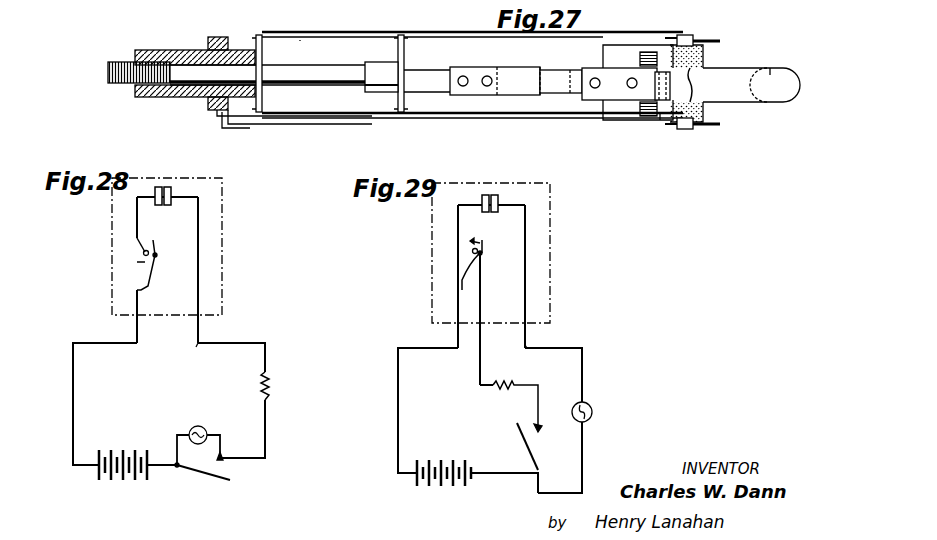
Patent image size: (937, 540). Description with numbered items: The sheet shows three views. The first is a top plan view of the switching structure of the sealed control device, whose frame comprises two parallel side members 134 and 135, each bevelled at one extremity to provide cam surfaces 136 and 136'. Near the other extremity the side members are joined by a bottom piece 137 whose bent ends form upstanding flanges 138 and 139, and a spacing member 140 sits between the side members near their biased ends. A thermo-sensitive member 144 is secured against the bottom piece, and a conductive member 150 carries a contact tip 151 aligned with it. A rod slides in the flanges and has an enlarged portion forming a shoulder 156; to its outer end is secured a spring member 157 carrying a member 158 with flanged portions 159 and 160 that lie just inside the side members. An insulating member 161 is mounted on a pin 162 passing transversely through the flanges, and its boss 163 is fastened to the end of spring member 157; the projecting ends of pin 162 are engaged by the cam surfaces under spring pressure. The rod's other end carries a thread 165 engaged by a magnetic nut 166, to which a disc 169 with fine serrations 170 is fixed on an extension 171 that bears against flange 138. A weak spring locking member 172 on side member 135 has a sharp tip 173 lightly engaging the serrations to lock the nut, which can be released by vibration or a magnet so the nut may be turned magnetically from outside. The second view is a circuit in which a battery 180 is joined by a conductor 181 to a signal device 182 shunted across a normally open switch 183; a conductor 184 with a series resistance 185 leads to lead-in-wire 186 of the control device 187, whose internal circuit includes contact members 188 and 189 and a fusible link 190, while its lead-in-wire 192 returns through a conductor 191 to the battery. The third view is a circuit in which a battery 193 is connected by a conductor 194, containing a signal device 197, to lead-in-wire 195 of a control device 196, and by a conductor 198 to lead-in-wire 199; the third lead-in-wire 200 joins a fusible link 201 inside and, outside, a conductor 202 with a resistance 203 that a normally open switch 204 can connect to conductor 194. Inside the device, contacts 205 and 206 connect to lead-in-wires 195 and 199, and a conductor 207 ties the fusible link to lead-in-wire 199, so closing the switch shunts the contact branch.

In FIG. 27, the side member 134 is at (450, 33).
In FIG. 27, the side member 135 is at (432, 118).
In FIG. 27, the cam surface 136 is at (684, 27).
In FIG. 27, the cam surface 136' is at (684, 136).
In FIG. 27, the bottom piece 137 is at (300, 40).
In FIG. 27, the upstanding flange 138 is at (258, 40).
In FIG. 27, the upstanding flange 139 is at (404, 45).
In FIG. 27, the spacing member 140 is at (590, 100).
In FIG. 27, the thermo-sensitive member 144 is at (512, 97).
In FIG. 27, the conductive member 150 is at (756, 100).
In FIG. 27, the contact tip 151 is at (772, 68).
In FIG. 27, the shoulder 156 is at (368, 92).
In FIG. 27, the spring member 157 is at (552, 95).
In FIG. 27, the member 158 is at (618, 60).
In FIG. 27, the flanged portion 159 is at (643, 45).
In FIG. 27, the flanged portion 160 is at (658, 116).
In FIG. 27, the insulating member 161 is at (712, 55).
In FIG. 27, the pin 162 is at (705, 37).
In FIG. 27, the boss 163 is at (660, 120).
In FIG. 27, the thread 165 is at (320, 70).
In FIG. 27, the nut 166 is at (165, 97).
In FIG. 27, the disc 169 is at (208, 42).
In FIG. 27, the serrations 170 is at (213, 111).
In FIG. 27, the extension 171 is at (243, 117).
In FIG. 27, the spring locking member 172 is at (258, 118).
In FIG. 27, the sharp tip 173 is at (222, 128).
In FIG. 28, the source of electric energy 180 is at (125, 488).
In FIG. 28, the conductor 181 is at (163, 472).
In FIG. 28, the signal device 182 is at (203, 426).
In FIG. 28, the switch 183 is at (208, 476).
In FIG. 28, the conductor 184 is at (265, 430).
In FIG. 28, the resistance 185 is at (265, 386).
In FIG. 28, the lead-in-wire 186 is at (198, 343).
In FIG. 28, the control device 187 is at (215, 239).
In FIG. 28, the contact member 188 is at (170, 187).
In FIG. 28, the contact member 189 is at (157, 187).
In FIG. 28, the fusible link 190 is at (166, 250).
In FIG. 28, the conductor 191 is at (73, 408).
In FIG. 28, the lead-in-wire 192 is at (138, 343).
In FIG. 29, the source of electric energy 193 is at (428, 488).
In FIG. 29, the conductor 194 is at (505, 475).
In FIG. 29, the lead-in-wire 195 is at (528, 345).
In FIG. 29, the control device 196 is at (550, 243).
In FIG. 29, the signal device 197 is at (592, 410).
In FIG. 29, the conductor 198 is at (398, 418).
In FIG. 29, the lead-in-wire 199 is at (455, 345).
In FIG. 29, the lead-in-wire 200 is at (477, 368).
In FIG. 29, the fusible link 201 is at (484, 250).
In FIG. 29, the conductor 202 is at (480, 387).
In FIG. 29, the resistance 203 is at (518, 383).
In FIG. 29, the switch 204 is at (537, 437).
In FIG. 29, the contact 205 is at (496, 202).
In FIG. 29, the contact 206 is at (485, 195).
In FIG. 29, the conductor 207 is at (478, 256).